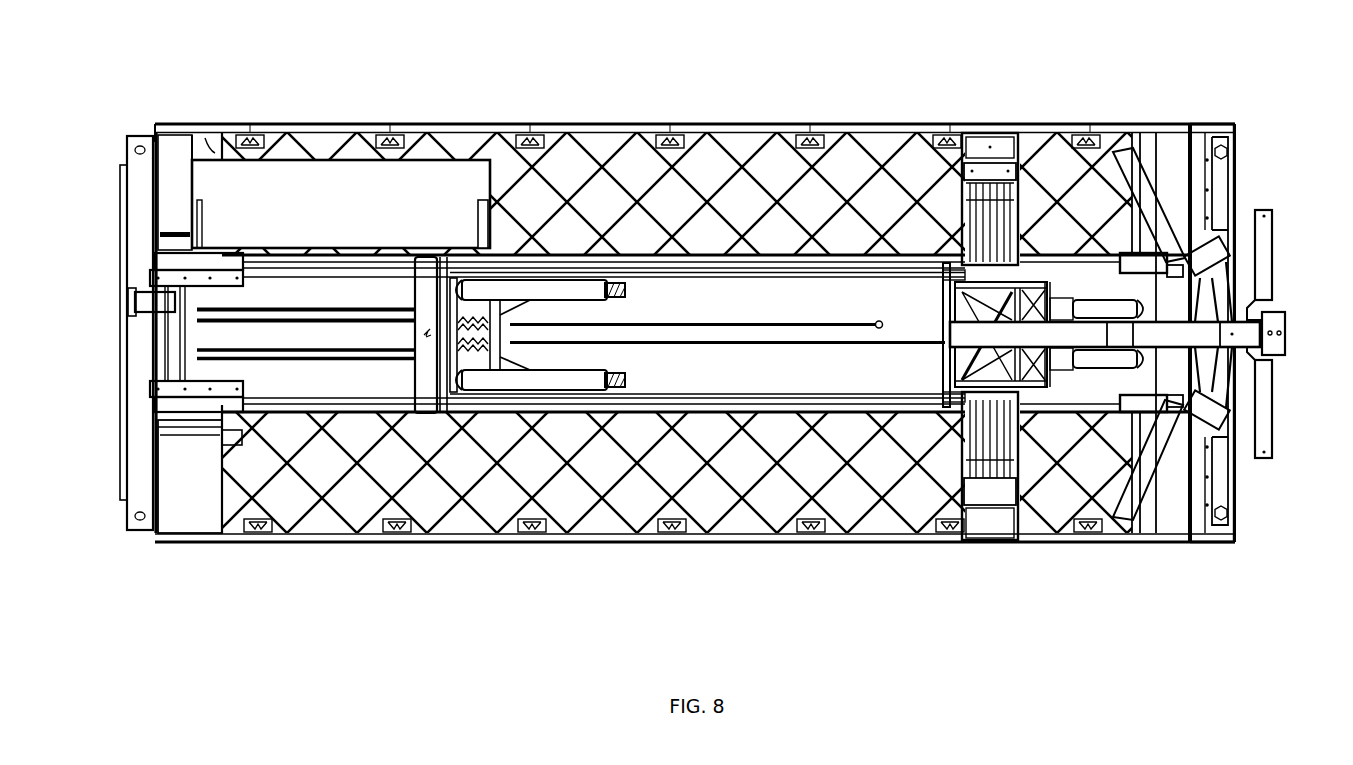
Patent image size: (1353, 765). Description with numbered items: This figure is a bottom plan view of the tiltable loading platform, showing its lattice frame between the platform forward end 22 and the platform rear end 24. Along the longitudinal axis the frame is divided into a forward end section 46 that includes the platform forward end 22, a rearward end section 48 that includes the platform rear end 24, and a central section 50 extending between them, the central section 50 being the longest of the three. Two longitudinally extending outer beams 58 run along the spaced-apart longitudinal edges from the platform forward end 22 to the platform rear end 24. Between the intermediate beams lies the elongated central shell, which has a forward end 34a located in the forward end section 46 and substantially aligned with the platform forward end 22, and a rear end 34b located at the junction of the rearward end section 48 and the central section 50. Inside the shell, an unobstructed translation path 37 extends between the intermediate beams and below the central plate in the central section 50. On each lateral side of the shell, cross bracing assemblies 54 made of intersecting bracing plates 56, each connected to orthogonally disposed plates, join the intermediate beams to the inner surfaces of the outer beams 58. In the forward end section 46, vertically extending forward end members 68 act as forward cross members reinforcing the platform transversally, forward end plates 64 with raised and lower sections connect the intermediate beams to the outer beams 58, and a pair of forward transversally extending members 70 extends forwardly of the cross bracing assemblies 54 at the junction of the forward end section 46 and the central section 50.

The platform forward end 22 is at (156, 97).
The platform rear end 24 is at (1238, 110).
The forward end of the elongated central shell 34a is at (160, 323).
The rear end of the elongated central shell 34b is at (1190, 289).
The translation path 37 is at (687, 368).
The forward end section 46 is at (186, 102).
The rearward end section 48 is at (1215, 112).
The central section 50 is at (690, 113).
The cross bracing assemblies 54 is at (619, 175).
The intersecting bracing plates 56 is at (830, 167).
The longitudinally extending outer beams 58 is at (887, 126).
The forward end plates 64 is at (160, 198).
The vertically extending forward end members 68 is at (158, 222).
The forward transversally extending members 70 is at (208, 138).